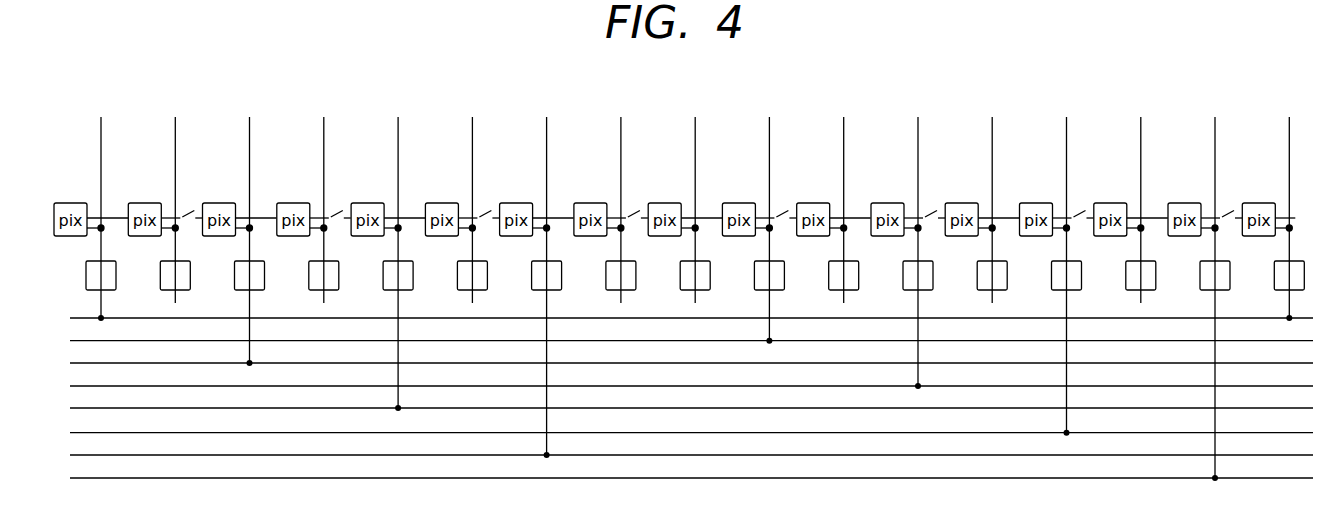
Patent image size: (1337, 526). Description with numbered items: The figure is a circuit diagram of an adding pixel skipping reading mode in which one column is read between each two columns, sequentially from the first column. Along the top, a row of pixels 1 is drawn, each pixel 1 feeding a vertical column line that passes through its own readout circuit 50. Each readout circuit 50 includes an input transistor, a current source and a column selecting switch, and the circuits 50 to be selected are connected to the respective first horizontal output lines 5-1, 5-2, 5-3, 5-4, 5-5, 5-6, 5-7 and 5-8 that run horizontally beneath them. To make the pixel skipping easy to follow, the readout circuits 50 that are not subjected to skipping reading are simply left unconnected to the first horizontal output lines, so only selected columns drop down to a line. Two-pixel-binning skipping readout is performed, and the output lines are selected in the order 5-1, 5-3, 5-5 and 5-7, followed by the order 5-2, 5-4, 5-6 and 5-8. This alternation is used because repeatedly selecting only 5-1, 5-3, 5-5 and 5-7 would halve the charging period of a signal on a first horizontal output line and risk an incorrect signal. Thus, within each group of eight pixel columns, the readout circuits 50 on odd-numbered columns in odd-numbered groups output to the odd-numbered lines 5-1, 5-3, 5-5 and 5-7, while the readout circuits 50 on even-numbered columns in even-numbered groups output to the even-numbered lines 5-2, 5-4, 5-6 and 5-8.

The pixel 1 is at (73, 202).
The readout circuit 50 is at (86, 277).
The first horizontal output line 5-1 is at (70, 318).
The first horizontal output line 5-2 is at (70, 341).
The first horizontal output line 5-3 is at (70, 363).
The first horizontal output line 5-4 is at (70, 386).
The first horizontal output line 5-5 is at (70, 408).
The first horizontal output line 5-6 is at (70, 433).
The first horizontal output line 5-7 is at (70, 455).
The first horizontal output line 5-8 is at (70, 478).